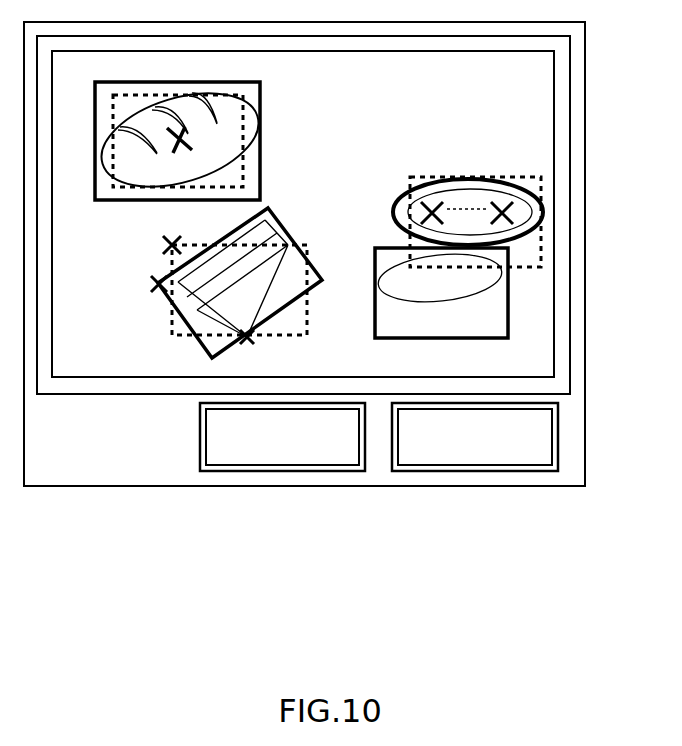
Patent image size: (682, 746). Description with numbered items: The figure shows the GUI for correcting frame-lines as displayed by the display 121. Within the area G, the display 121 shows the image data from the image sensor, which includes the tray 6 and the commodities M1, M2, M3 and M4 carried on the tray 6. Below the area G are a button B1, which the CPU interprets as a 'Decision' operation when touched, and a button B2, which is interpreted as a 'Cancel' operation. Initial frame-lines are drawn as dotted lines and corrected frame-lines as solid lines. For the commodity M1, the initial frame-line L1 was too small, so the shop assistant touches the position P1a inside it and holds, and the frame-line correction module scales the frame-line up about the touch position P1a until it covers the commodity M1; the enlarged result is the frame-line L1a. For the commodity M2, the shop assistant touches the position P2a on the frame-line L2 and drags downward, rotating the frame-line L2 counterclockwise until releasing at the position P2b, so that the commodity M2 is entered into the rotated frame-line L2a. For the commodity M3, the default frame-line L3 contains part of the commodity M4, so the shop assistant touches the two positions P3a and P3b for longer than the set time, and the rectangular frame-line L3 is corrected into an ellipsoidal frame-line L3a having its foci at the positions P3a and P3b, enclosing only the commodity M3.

The tray 6 is at (556, 76).
The display 121 is at (586, 125).
The area G is at (571, 211).
The initial frame-line L1 is at (130, 77).
The scaled-up frame-line L1a is at (262, 88).
The commodity M1 is at (190, 139).
The touch position P1a is at (232, 150).
The initial frame-line L2 is at (263, 337).
The rotated frame-line L2a is at (206, 354).
The commodity M2 is at (287, 220).
The touch position P2a is at (165, 249).
The release position P2b is at (157, 290).
The initial frame-line L3 is at (403, 180).
The ellipsoidal frame-line L3a is at (521, 172).
The commodity M3 is at (455, 193).
The touch position P3a is at (420, 208).
The touch position P3b is at (483, 208).
The commodity M4 is at (443, 302).
The button B1 is at (281, 472).
The button B2 is at (472, 472).